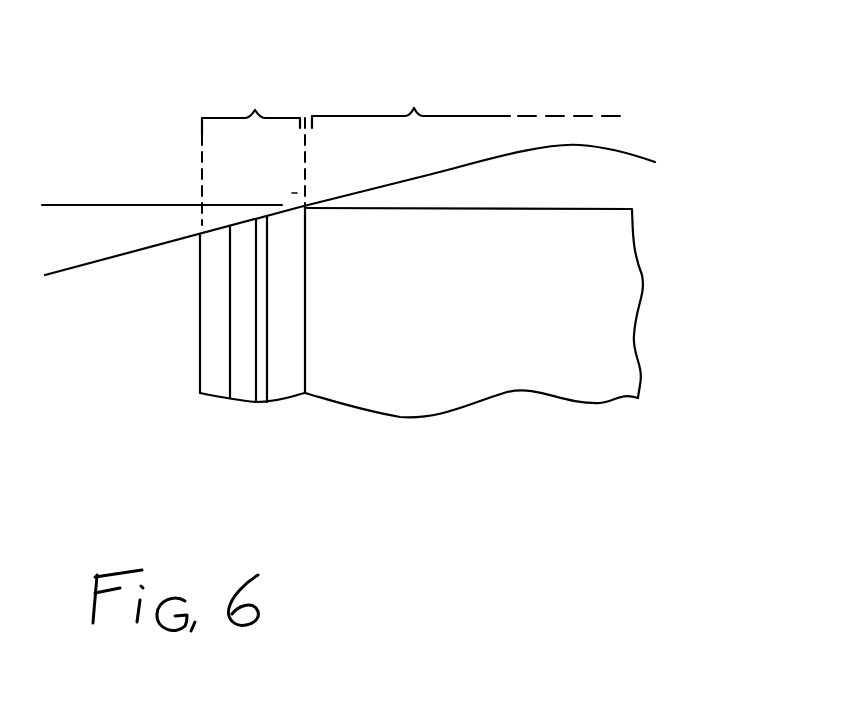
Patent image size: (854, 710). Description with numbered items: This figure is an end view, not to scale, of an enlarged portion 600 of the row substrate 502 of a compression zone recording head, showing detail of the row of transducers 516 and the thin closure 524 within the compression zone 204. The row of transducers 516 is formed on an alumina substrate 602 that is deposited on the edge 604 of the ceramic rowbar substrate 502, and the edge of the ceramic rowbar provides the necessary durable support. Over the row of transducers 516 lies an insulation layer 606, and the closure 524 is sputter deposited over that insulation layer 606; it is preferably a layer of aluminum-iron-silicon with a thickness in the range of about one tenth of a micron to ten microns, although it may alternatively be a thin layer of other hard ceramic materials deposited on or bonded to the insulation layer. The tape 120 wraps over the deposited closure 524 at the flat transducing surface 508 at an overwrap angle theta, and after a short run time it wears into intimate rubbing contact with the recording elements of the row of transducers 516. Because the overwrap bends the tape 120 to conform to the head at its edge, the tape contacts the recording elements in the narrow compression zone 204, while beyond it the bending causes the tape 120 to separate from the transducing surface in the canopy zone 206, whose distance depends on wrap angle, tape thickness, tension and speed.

The tape 120 is at (118, 251).
The compression zone 204 is at (255, 97).
The canopy zone 206 is at (416, 95).
The row substrate 502 is at (645, 277).
The flat transducing surface 508 is at (518, 207).
The row of transducers 516 is at (258, 403).
The closure 524 is at (197, 373).
The enlarged portion 600 is at (567, 455).
The alumina substrate 602 is at (287, 397).
The edge 604 is at (306, 284).
The insulation layer 606 is at (238, 402).